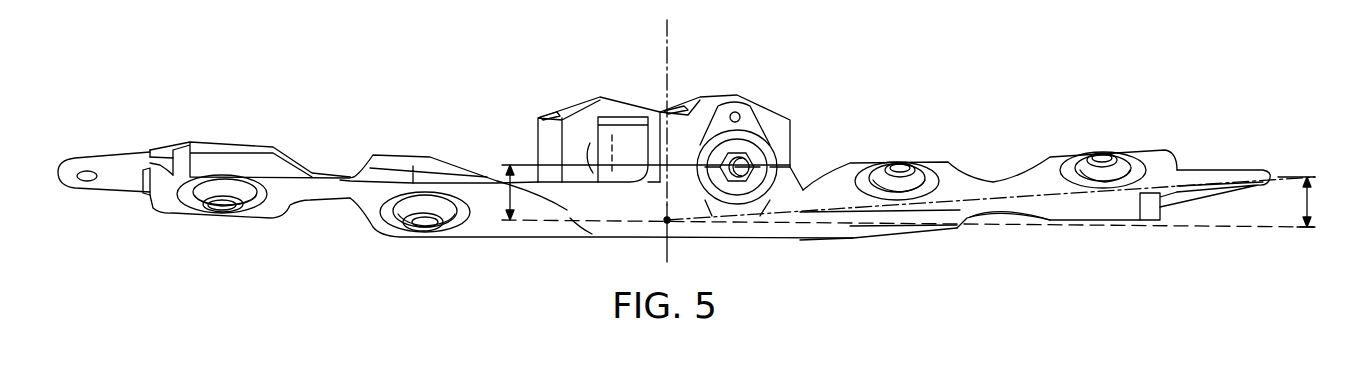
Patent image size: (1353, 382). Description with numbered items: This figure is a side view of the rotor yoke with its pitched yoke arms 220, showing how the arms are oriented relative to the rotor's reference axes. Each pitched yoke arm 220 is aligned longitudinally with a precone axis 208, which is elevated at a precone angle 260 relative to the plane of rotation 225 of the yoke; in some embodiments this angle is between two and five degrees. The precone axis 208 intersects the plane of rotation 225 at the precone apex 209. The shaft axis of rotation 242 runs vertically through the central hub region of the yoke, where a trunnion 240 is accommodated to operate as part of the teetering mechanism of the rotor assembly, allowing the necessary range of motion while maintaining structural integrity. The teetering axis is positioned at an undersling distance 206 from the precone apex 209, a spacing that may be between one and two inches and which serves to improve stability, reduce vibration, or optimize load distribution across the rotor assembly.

The pitched yoke arm 220 is at (235, 148).
The undersling distance 206 is at (521, 165).
The trunnion 240 is at (620, 138).
The shaft axis of rotation 242 is at (670, 40).
The precone apex 209 is at (672, 226).
The precone axis 208 is at (957, 202).
The plane of rotation 225 is at (1248, 230).
The precone angle 260 is at (1316, 205).